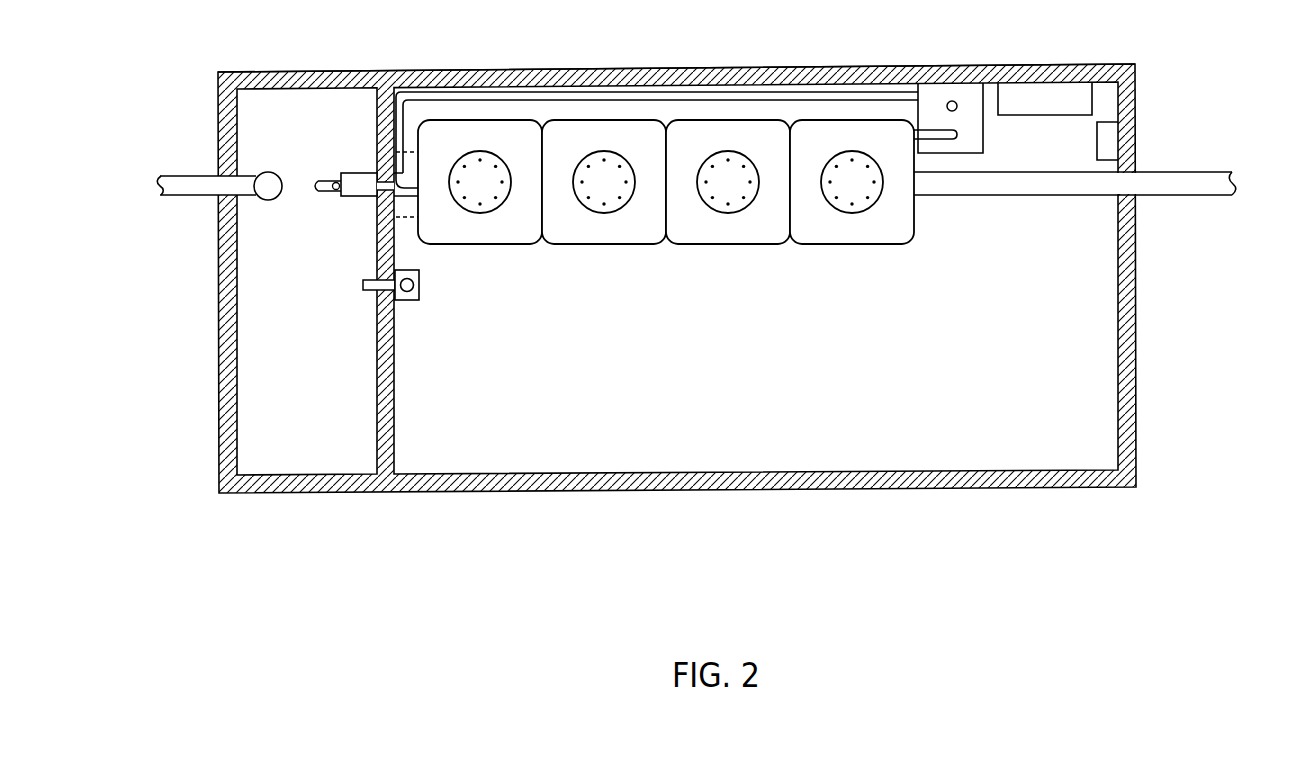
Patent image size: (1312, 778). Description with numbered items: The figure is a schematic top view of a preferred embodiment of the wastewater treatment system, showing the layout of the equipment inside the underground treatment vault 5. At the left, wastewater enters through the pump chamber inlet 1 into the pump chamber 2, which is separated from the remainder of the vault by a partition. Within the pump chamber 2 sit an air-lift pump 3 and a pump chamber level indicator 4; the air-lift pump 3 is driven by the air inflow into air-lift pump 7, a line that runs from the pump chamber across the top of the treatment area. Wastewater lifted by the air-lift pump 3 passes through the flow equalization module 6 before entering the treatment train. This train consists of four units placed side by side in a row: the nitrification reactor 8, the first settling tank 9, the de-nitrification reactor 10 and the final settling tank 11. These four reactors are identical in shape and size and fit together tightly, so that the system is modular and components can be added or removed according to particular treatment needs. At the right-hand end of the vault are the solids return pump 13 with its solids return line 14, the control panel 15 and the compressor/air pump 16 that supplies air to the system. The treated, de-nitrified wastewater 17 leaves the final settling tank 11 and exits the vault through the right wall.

The pump chamber inlet 1 is at (148, 185).
The pump chamber 2 is at (218, 381).
The air-lift pump 3 is at (317, 181).
The pump chamber level indicator 4 is at (419, 285).
The underground treatment vault 5 is at (477, 70).
The flow equalization module 6 is at (406, 218).
The air inflow into air-lift pump 7 is at (566, 97).
The nitrification reactor 8 is at (480, 182).
The settling tank 9 is at (604, 182).
The de-nitrification reactor 10 is at (728, 182).
The settling tank 11 is at (852, 182).
The solids return pump 13 is at (983, 145).
The solids return line 14 is at (952, 101).
The control panel 15 is at (1042, 115).
The compressor/air pump 16 is at (1097, 155).
The treated, de-nitrified wastewater 17 is at (1238, 177).